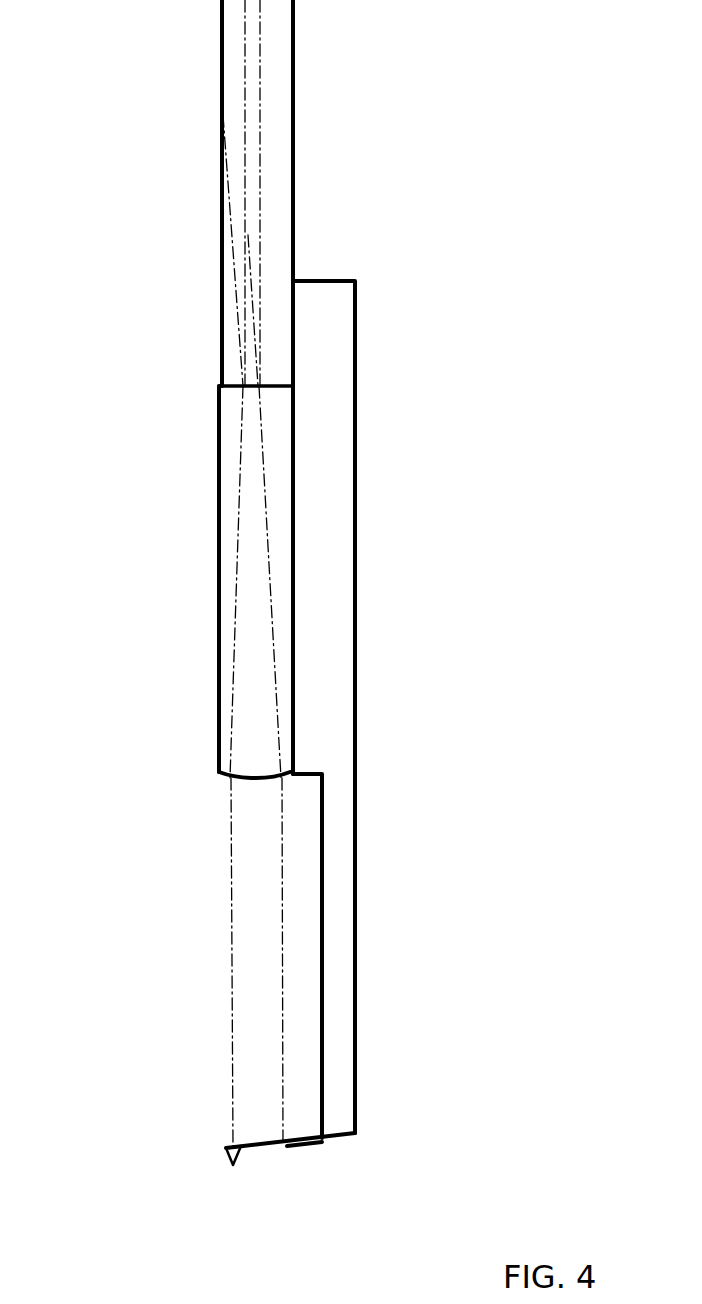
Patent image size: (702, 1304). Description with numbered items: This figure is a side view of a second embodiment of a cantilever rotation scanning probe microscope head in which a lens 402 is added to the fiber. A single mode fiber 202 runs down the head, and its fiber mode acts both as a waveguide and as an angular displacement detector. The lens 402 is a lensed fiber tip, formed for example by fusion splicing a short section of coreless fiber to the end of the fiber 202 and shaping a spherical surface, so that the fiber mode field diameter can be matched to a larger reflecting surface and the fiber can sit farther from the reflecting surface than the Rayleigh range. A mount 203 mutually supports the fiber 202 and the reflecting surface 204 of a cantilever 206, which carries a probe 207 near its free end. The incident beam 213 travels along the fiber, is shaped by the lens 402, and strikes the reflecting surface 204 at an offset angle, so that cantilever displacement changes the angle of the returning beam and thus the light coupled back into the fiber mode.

The single mode fiber 202 is at (293, 152).
The incident beam 213 is at (258, 232).
The lens 402 is at (219, 528).
The mount 203 is at (355, 713).
The reflecting surface 204 is at (263, 1140).
The cantilever 206 is at (289, 1148).
The probe 207 is at (230, 1166).